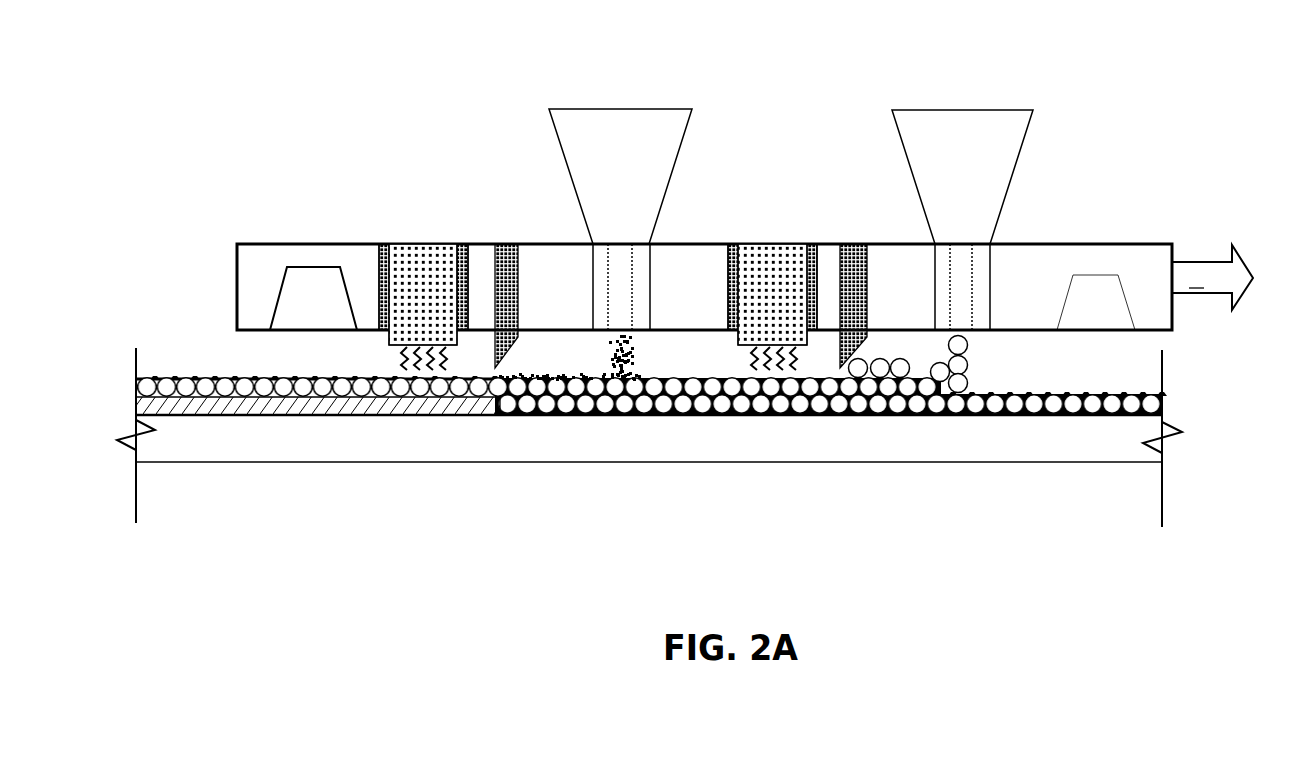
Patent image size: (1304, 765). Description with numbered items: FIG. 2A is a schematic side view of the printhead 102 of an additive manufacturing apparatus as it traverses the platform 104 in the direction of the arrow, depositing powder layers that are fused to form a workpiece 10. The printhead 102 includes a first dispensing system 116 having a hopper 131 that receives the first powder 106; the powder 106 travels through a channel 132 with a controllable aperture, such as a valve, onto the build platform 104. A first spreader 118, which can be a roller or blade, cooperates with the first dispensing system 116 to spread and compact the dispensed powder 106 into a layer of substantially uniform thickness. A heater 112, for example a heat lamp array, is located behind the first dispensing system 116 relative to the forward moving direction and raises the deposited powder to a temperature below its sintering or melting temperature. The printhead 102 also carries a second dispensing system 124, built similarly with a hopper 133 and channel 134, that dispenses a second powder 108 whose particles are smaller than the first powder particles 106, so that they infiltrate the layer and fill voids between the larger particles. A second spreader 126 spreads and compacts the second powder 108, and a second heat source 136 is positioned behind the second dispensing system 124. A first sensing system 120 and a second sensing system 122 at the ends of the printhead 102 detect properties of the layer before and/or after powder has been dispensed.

The workpiece 10 is at (297, 408).
The printhead 102 is at (259, 222).
The platform 104 is at (456, 453).
The powder 106 is at (970, 360).
The second powder 108 is at (633, 362).
The heater 112 is at (792, 306).
The first dispensing system 116 is at (993, 189).
The first spreader 118 is at (845, 244).
The first sensing system 120 is at (334, 321).
The second sensing system 122 is at (1117, 318).
The second dispensing system 124 is at (587, 180).
The second spreader 126 is at (507, 244).
The hopper 131 is at (982, 171).
The channel 132 is at (972, 290).
The hopper 133 is at (541, 127).
The channel 134 is at (632, 295).
The second heat source 136 is at (443, 306).